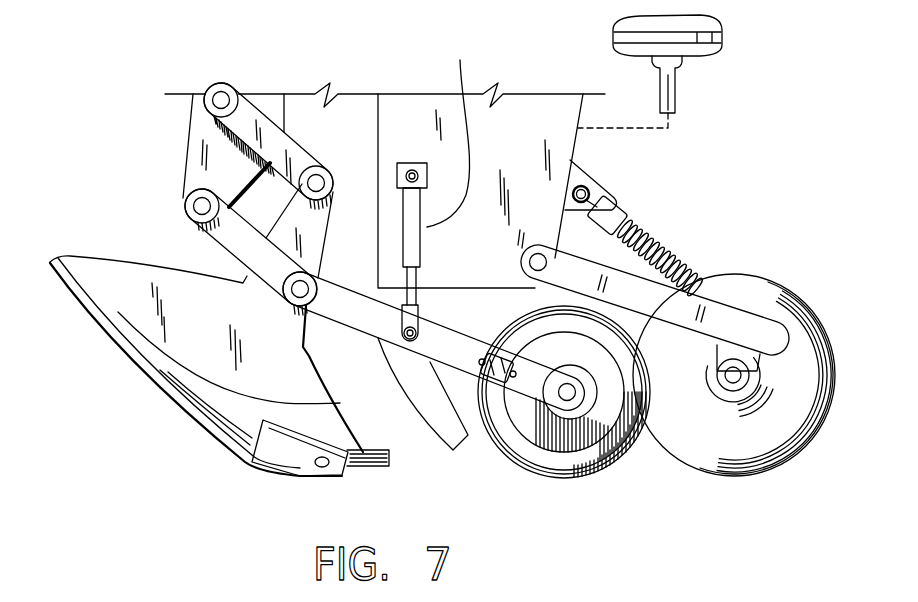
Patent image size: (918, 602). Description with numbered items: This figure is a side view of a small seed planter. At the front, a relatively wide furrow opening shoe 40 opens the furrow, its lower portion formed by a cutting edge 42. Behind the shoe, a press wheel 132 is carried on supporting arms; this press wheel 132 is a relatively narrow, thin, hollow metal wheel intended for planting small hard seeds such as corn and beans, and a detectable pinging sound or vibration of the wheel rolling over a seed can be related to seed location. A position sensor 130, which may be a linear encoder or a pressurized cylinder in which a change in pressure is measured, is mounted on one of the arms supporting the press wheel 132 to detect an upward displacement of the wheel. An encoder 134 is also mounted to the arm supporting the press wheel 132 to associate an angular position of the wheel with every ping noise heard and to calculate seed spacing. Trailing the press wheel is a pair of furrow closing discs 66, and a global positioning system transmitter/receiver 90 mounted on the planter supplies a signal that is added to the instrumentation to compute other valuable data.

The furrow opening shoe 40 is at (219, 304).
The cutting edge 42 is at (187, 417).
The furrow closing discs 66 is at (810, 303).
The global positioning system (GPS) transmitter/receiver 90 is at (725, 45).
The position sensor 130 is at (445, 181).
The press wheel 132 is at (580, 340).
The encoder 134 is at (480, 383).